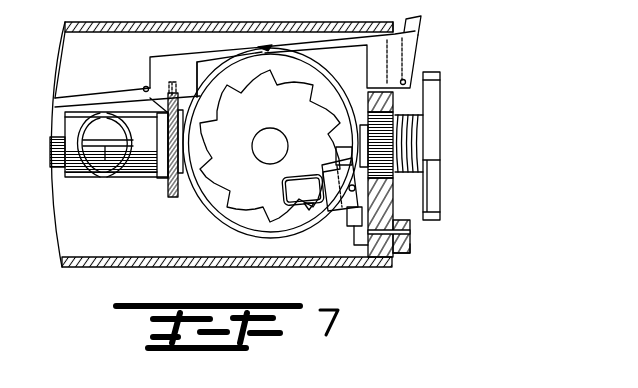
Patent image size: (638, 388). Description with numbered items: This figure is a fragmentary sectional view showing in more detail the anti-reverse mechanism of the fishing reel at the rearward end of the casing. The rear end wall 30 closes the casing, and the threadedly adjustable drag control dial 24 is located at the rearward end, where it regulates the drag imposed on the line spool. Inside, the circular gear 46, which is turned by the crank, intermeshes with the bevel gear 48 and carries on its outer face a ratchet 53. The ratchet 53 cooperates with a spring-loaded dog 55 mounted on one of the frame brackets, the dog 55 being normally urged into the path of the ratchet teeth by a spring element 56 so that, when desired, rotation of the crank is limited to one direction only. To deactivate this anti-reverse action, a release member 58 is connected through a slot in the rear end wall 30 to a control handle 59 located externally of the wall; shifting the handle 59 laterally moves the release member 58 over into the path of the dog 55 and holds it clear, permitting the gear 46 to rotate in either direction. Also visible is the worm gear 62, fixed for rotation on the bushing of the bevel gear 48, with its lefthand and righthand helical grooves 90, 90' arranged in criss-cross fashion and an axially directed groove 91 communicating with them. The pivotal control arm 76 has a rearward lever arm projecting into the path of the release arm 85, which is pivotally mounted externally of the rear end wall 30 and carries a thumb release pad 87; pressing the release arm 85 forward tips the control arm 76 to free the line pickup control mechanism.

The drag control dial 24 is at (440, 93).
The rear end wall 30 is at (393, 207).
The circular gear 46 is at (228, 222).
The bevel gear 48 is at (173, 187).
The ratchet 53 is at (248, 82).
The spring-loaded dog 55 is at (340, 153).
The spring element 56 is at (292, 204).
The release member 58 is at (410, 232).
The control handle 59 is at (410, 254).
The worm gear 62 is at (140, 155).
The pivotal control arm 76 is at (150, 57).
The release arm 85 is at (317, 38).
The thumb release pad 87 is at (423, 21).
The lefthand helical groove 90 is at (67, 153).
The righthand helical groove 90' is at (51, 141).
The axially directed groove 91 is at (105, 148).